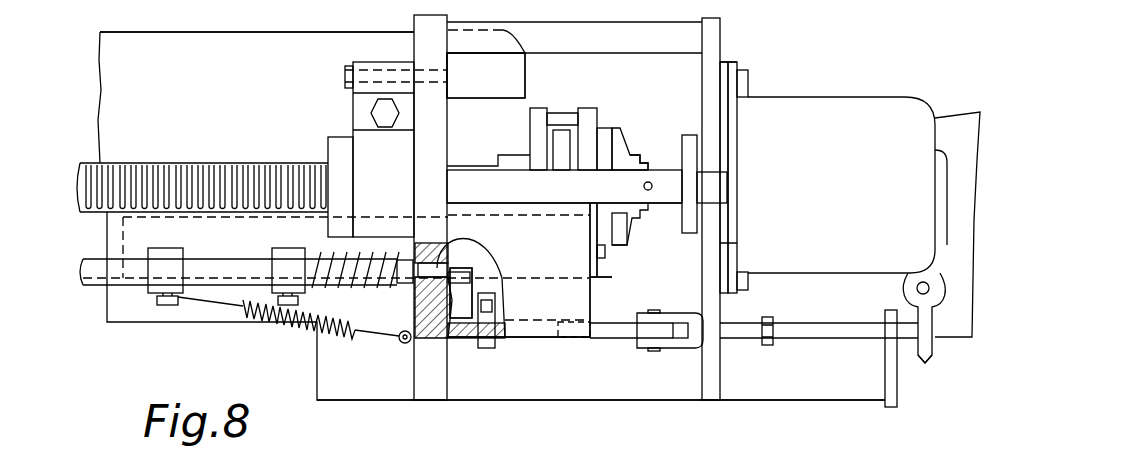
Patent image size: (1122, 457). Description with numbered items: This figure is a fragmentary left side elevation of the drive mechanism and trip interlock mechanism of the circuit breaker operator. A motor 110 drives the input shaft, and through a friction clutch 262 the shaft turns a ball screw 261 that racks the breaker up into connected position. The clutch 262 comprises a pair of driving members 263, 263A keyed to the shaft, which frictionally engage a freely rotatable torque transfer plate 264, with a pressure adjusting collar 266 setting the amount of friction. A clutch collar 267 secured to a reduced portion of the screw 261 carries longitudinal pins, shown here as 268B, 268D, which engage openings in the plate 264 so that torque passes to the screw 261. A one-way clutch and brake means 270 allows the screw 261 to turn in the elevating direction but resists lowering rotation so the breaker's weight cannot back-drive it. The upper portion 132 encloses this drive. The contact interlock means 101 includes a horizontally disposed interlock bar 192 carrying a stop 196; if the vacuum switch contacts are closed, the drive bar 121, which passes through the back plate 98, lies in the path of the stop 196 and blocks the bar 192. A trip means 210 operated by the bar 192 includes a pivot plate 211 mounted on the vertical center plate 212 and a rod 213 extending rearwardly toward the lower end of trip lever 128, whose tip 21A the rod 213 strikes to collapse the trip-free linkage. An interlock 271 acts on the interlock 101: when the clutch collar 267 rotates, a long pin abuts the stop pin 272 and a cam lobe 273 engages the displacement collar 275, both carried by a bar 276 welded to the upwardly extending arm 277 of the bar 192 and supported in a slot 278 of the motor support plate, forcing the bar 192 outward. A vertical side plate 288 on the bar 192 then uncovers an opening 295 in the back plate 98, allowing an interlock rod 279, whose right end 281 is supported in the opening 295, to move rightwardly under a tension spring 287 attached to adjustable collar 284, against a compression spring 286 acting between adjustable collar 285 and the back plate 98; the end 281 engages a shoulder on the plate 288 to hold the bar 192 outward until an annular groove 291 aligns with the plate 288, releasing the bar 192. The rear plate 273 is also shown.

The back plate 98 is at (420, 15).
The cam lobe 273 is at (671, 200).
The housing top wall 132 is at (192, 38).
The one-way clutch and brake means 270 is at (350, 120).
The ball screw 261 is at (257, 165).
The clutch collar 267 is at (532, 125).
The collar 268B is at (547, 115).
The driving member 263A is at (568, 130).
The torque transfer plate 264 is at (588, 108).
The driving member 263 is at (598, 128).
The friction clutch 262 is at (656, 110).
The pressure adjusting collar 266 is at (630, 160).
The opening 295 is at (564, 187).
The stop pin 272 is at (643, 186).
The displacement collar 275 is at (682, 232).
The slot 278 is at (715, 200).
The motor 110 is at (848, 97).
The trip lever 128 is at (975, 361).
The lug tip 21A is at (927, 366).
The rod 213 is at (795, 337).
The pivot plate 211 is at (615, 333).
The trip means 210 is at (676, 352).
The vertical center plate 212 is at (548, 395).
The interlock bar 192 is at (530, 337).
The stop 196 is at (492, 312).
The vertical side plate 288 is at (470, 272).
The right end 281 is at (440, 262).
The annular groove 291 is at (400, 262).
The bar 276 is at (545, 203).
The collar 268D is at (605, 252).
The drive bar 121 is at (606, 272).
The contact trip interlock means 101 is at (598, 292).
The upwardly extending arm 277 is at (582, 303).
The interlock rod 279 is at (220, 262).
The adjustable collar 284 is at (157, 258).
The adjustable collar 285 is at (282, 258).
The compression spring 286 is at (372, 282).
The interlock 271 is at (290, 330).
The tension spring 287 is at (345, 341).